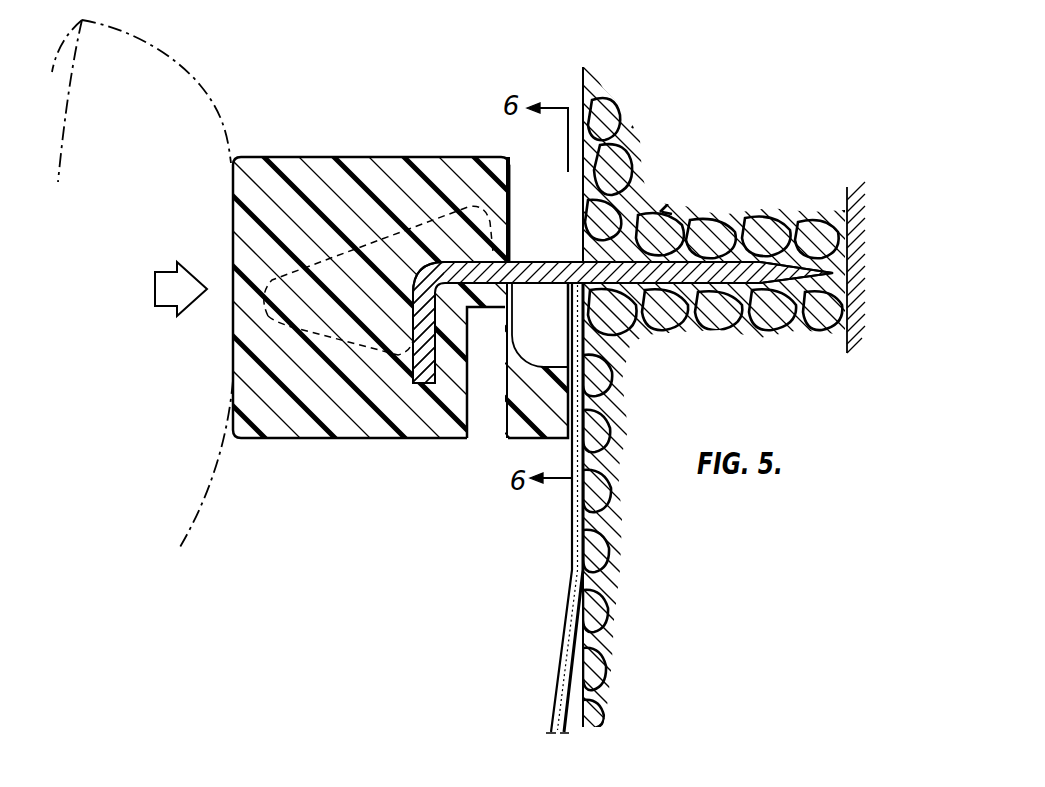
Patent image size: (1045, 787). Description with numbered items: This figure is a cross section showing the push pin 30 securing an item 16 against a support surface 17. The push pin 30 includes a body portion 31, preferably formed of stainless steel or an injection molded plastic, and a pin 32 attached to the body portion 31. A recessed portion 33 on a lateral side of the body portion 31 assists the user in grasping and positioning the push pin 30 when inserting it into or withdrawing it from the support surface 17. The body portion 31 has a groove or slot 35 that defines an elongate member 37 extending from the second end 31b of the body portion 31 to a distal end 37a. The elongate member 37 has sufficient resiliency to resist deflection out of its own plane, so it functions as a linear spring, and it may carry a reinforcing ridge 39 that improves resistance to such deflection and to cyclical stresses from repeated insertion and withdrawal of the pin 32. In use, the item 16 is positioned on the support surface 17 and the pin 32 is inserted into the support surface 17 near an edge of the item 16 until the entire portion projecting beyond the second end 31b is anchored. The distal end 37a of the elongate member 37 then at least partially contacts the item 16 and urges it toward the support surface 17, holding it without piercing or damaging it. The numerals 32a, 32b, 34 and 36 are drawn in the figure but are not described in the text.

The item 16 is at (561, 678).
The support surface 17 is at (617, 127).
The push pin 30 is at (423, 452).
The body portion 31 is at (269, 178).
The second end 31b is at (512, 247).
The pin 32 is at (632, 263).
The seal strip tip 32a is at (822, 290).
The seal strip flange 32b is at (416, 268).
The recessed portion 33 is at (466, 176).
The wall 34 is at (826, 268).
The slot 35 is at (474, 440).
The flange foot 36 is at (411, 384).
The elongate member 37 is at (506, 438).
The distal end 37a is at (522, 441).
The reinforcing ridge 39 is at (482, 319).